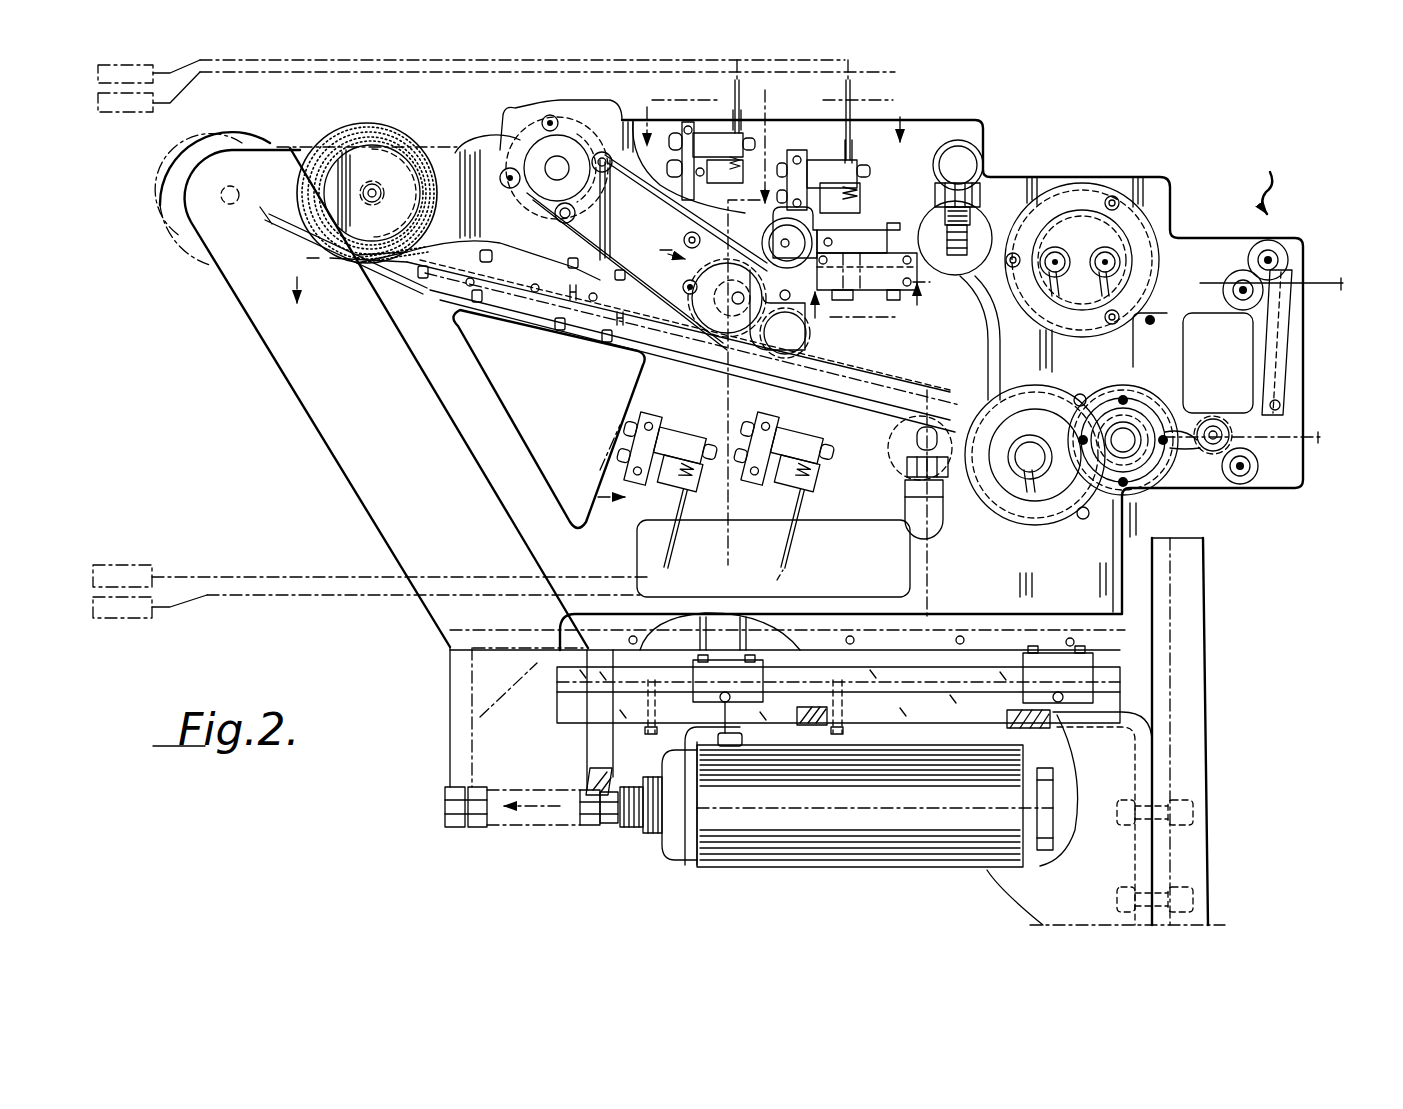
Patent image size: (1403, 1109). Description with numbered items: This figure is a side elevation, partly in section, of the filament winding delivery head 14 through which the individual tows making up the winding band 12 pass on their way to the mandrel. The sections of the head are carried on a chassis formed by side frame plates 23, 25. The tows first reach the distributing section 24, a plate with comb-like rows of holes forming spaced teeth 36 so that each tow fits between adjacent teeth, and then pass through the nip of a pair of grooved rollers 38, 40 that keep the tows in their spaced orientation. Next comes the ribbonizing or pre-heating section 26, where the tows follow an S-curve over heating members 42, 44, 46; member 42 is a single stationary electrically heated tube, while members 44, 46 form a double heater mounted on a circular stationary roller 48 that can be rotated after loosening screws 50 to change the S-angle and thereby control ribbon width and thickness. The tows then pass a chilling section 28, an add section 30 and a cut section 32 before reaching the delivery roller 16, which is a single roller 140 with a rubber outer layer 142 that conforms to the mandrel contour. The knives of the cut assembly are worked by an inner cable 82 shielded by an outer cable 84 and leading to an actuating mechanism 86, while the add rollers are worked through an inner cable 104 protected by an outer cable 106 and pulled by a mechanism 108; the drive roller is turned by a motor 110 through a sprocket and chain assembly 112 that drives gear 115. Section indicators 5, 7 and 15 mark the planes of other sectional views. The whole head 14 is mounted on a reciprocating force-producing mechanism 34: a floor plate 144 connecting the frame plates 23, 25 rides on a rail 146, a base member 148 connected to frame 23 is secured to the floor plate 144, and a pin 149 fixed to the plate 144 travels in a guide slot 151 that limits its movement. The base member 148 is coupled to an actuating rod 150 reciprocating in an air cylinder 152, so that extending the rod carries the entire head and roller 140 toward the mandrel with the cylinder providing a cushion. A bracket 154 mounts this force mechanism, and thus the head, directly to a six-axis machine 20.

The section line 5- 5 is at (601, 193).
The section line 7- 7 is at (629, 370).
The winding band 12 is at (1322, 287).
The filament winding head 14 is at (722, 68).
The section line 15- 15 is at (871, 278).
The delivery roller 16 is at (420, 132).
The six-axis machine 20 is at (1160, 635).
The side frame plate 23 is at (453, 233).
The distributing section 24 is at (1269, 278).
The side frame plate 25 is at (503, 482).
The ribbonizing or heating section 26 is at (1128, 176).
The chilling section 28 is at (983, 178).
The add section 30 is at (810, 142).
The cut section 32 is at (717, 118).
The reciprocating mechanism 34 is at (557, 834).
The spaced teeth 36 is at (1305, 263).
The grooved roller 38 is at (1273, 246).
The grooved roller 40 is at (1217, 422).
The heating member 42 is at (1107, 250).
The heating member 44 is at (1157, 277).
The heating member 46 is at (1047, 270).
The circular stationary roller 48 is at (1153, 243).
The screws 50 is at (1018, 255).
The inner cable 82 is at (667, 571).
The outer cable 84 is at (680, 531).
The actuating mechanism 86 is at (130, 567).
The inner cable 104 is at (778, 580).
The outer cable 106 is at (790, 538).
The actuating mechanism 108 is at (147, 620).
The motor 110 is at (508, 118).
The sprocket and chain assembly 112 is at (725, 272).
The gear 115 is at (672, 240).
The roller 140 is at (403, 120).
The rubber outer layer 142 is at (330, 146).
The floor plate 144 is at (567, 621).
The rail 146 is at (478, 717).
The base member 148 is at (587, 758).
The pin 149 is at (963, 662).
The actuating rod 150 is at (563, 815).
The guide slot 151 is at (1057, 740).
The air cylinder 152 is at (843, 847).
The bracket 154 is at (1143, 781).